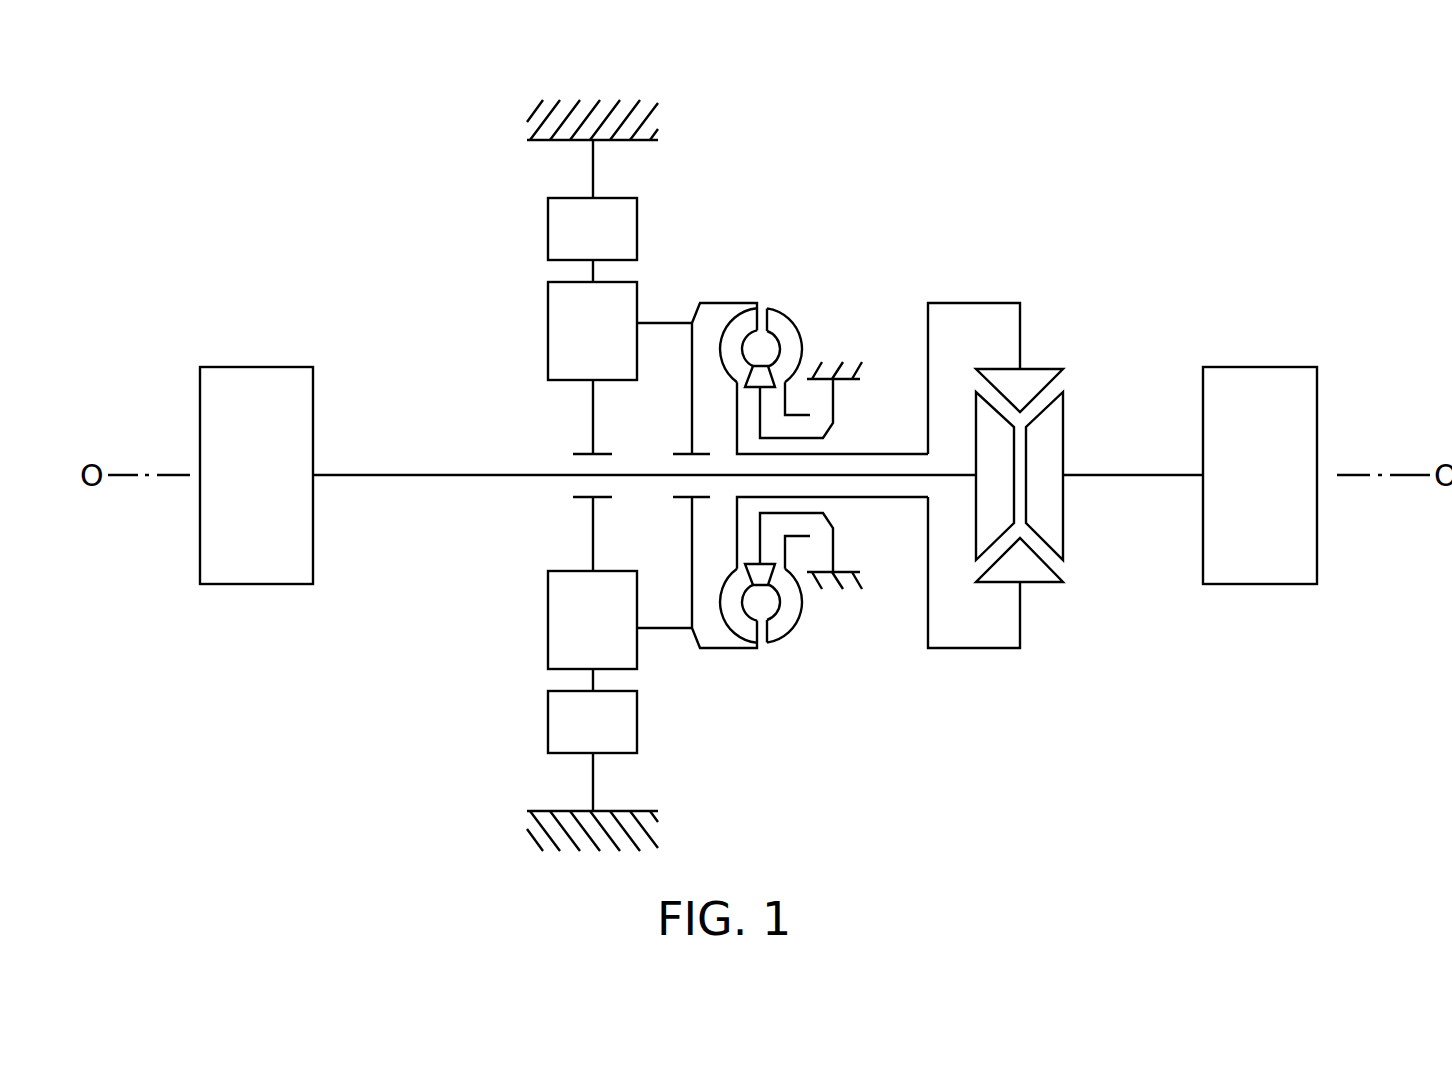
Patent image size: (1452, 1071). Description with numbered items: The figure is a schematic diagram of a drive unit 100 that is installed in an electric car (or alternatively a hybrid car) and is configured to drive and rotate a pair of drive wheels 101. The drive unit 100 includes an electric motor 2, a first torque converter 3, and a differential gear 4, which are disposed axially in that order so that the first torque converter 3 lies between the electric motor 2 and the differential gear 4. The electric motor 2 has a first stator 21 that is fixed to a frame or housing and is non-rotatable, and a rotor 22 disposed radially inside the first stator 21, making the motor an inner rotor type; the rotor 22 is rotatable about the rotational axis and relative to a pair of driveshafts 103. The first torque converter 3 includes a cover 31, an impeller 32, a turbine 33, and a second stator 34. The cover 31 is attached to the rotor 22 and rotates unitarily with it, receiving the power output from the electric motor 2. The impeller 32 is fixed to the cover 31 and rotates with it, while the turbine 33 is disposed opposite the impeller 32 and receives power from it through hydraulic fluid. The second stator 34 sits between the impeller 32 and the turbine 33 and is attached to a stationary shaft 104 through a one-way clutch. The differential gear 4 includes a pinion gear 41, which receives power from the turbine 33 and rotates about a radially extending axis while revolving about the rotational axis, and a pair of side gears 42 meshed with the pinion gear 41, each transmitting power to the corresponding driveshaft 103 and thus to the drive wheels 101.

The drive unit 100 is at (952, 198).
The drive wheels 101 is at (240, 585).
The driveshafts 103 is at (412, 476).
The stationary shaft 104 is at (793, 437).
The electric motor 2 is at (532, 213).
The first stator 21 is at (560, 235).
The rotor 22 is at (560, 331).
The first torque converter 3 is at (778, 287).
The cover 31 is at (720, 303).
The impeller 32 is at (793, 330).
The turbine 33 is at (742, 323).
The second stator 34 is at (763, 373).
The differential gear 4 is at (1085, 363).
The pinion gear 41 is at (1030, 380).
The side gears 42 is at (1005, 468).